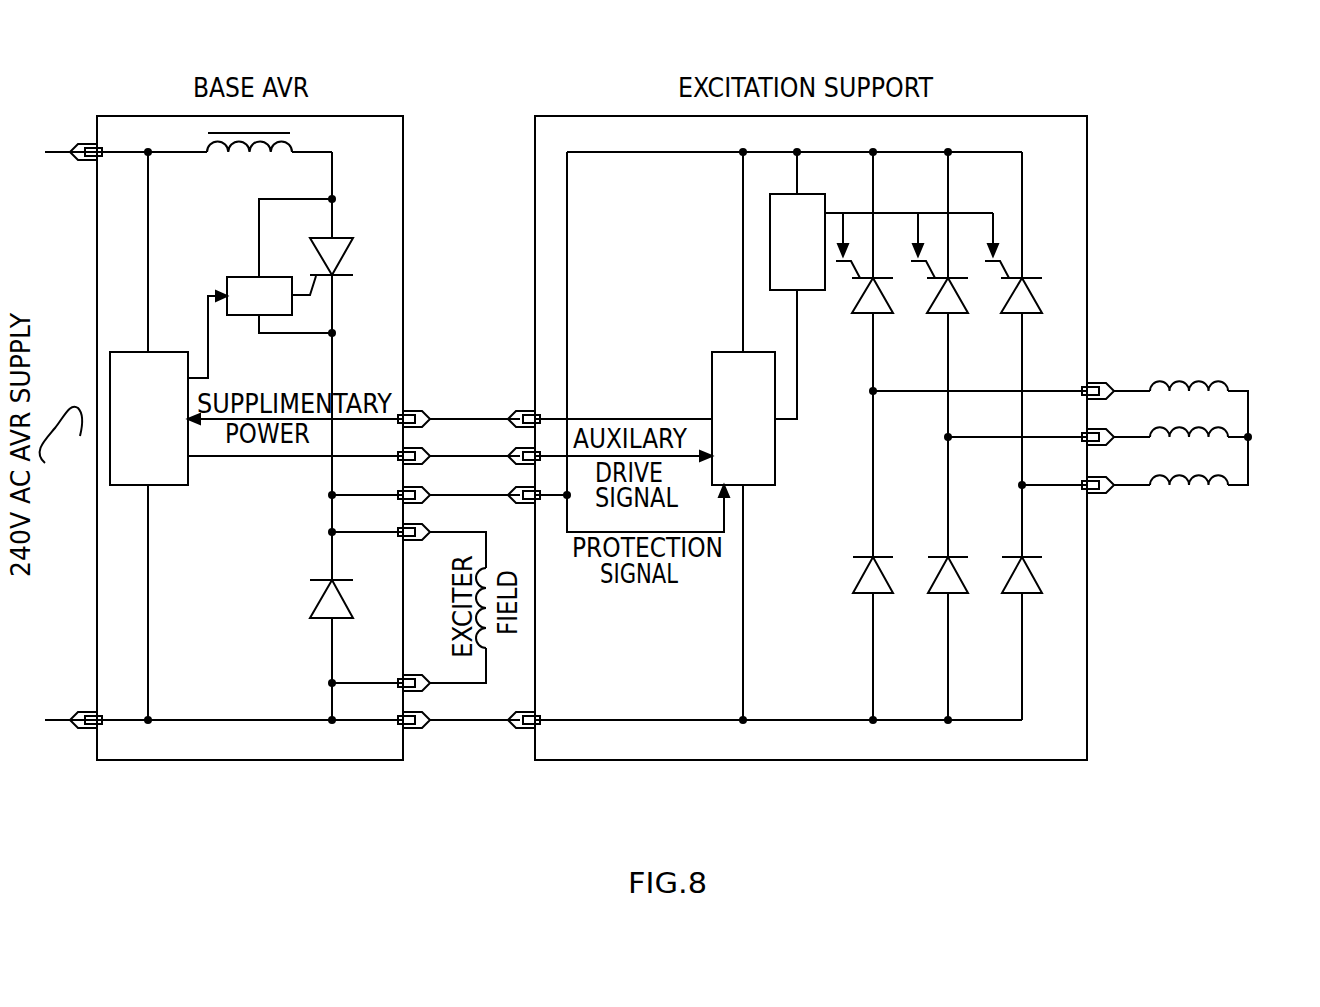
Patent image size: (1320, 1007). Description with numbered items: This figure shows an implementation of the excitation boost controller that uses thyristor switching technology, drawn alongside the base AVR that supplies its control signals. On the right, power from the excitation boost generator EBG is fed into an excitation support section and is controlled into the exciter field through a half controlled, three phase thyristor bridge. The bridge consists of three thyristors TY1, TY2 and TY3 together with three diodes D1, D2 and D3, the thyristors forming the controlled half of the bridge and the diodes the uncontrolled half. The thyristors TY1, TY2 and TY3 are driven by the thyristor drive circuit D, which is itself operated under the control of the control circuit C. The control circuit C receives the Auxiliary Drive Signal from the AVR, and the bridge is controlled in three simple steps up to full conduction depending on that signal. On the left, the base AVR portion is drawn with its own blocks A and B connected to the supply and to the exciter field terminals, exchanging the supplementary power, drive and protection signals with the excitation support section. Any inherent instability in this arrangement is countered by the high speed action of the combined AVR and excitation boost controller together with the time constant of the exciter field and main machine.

The base AVR control unit A is at (149, 418).
The thyristor gate drive unit B is at (259, 296).
The control circuit C is at (743, 418).
The thyristor drive circuit D is at (797, 242).
The thyristor TY1 is at (859, 305).
The thyristor TY2 is at (935, 305).
The thyristor TY3 is at (1009, 305).
The diode D1 is at (859, 594).
The diode D2 is at (936, 594).
The diode D3 is at (1010, 594).
The excitation boost generator EBG is at (1212, 433).